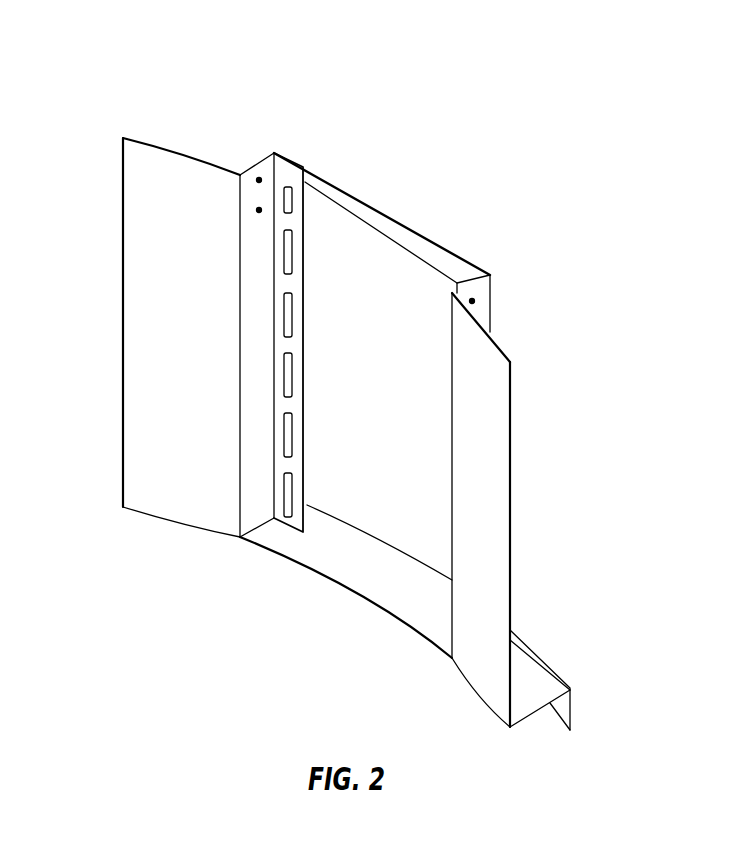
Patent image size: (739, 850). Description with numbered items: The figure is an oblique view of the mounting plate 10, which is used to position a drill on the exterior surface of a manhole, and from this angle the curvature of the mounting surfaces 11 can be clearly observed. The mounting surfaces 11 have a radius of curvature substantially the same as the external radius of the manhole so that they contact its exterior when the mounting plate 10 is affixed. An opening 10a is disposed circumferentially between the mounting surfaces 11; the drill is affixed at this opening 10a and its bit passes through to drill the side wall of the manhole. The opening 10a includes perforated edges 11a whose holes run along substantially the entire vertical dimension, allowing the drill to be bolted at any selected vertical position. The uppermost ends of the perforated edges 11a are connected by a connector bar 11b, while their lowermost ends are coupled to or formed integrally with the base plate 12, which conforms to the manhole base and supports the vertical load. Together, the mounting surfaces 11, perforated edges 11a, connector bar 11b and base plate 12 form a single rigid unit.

The mounting plate 10 is at (110, 67).
The opening 10a is at (368, 508).
The mounting surfaces 11 is at (147, 322).
The perforated edges 11a is at (305, 322).
The connector bar 11b is at (410, 230).
The base plate 12 is at (537, 680).